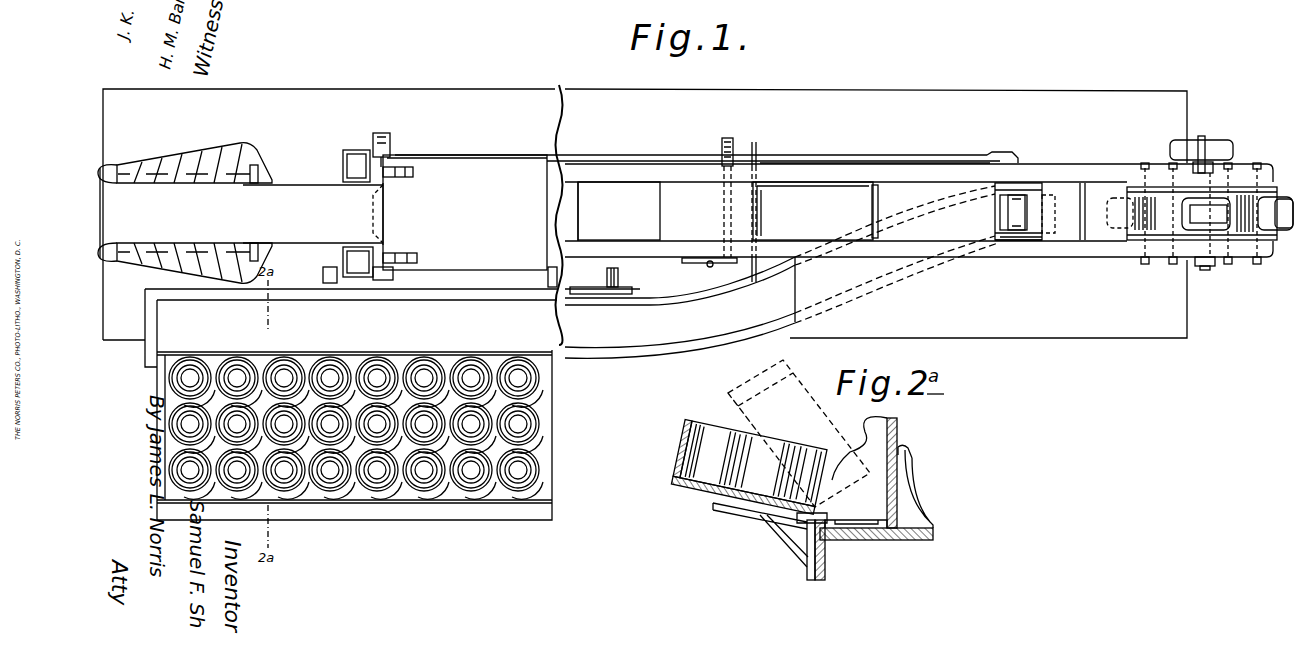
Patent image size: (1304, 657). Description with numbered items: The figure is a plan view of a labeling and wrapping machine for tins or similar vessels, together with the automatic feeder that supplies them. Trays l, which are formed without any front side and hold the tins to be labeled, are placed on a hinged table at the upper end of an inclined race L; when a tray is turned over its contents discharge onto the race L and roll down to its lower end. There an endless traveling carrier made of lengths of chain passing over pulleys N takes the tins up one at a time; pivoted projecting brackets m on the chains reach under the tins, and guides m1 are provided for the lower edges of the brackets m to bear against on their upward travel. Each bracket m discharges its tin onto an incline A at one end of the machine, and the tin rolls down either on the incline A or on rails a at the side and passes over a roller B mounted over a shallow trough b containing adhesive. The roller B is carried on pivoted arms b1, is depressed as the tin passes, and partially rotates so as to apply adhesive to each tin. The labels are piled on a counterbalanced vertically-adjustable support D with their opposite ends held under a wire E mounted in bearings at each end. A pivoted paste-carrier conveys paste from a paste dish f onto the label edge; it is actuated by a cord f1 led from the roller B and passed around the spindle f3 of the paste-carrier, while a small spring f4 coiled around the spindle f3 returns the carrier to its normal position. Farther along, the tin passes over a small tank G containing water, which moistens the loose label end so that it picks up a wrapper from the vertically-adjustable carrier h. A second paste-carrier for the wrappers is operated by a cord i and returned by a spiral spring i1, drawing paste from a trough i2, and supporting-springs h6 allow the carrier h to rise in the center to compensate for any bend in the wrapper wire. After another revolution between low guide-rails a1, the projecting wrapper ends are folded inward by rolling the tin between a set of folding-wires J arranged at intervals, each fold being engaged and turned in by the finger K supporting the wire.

In FIG. 1, the folding-wires J is at (238, 160).
In FIG. 1, the finger K is at (210, 183).
In FIG. 1, the low guide-rails a1 is at (336, 194).
In FIG. 1, the spiral spring i1 is at (374, 142).
In FIG. 1, the trough or dish i2 is at (358, 213).
In FIG. 1, the supporting-springs h6 is at (385, 180).
In FIG. 1, the wire E is at (384, 192).
In FIG. 1, the vertically-adjustable carrier h is at (465, 212).
In FIG. 1, the cord i is at (481, 154).
In FIG. 1, the rails a is at (590, 186).
In FIG. 1, the tank G is at (619, 211).
In FIG. 1, the spindle f3 is at (722, 152).
In FIG. 1, the spring f4 is at (758, 137).
In FIG. 1, the cord f1 is at (791, 163).
In FIG. 1, the shallow trough b is at (775, 213).
In FIG. 1, the counterbalanced vertically-adjustable holder or support D is at (815, 211).
In FIG. 1, the paste dish or pot f is at (700, 264).
In FIG. 1, the roller B is at (1000, 210).
In FIG. 1, the pivoted arms b1 is at (1010, 242).
In FIG. 1, the incline A is at (1063, 211).
In FIG. 1, the inclined race L is at (680, 307).
In FIG. 2A, the inclined race L is at (740, 507).
In FIG. 1, the pivoted projecting brackets m is at (1195, 195).
In FIG. 1, the guides m1 is at (1210, 213).
In FIG. 1, the pulleys N is at (1270, 181).
In FIG. 1, the trays l is at (160, 390).
In FIG. 2A, the trays l is at (690, 432).